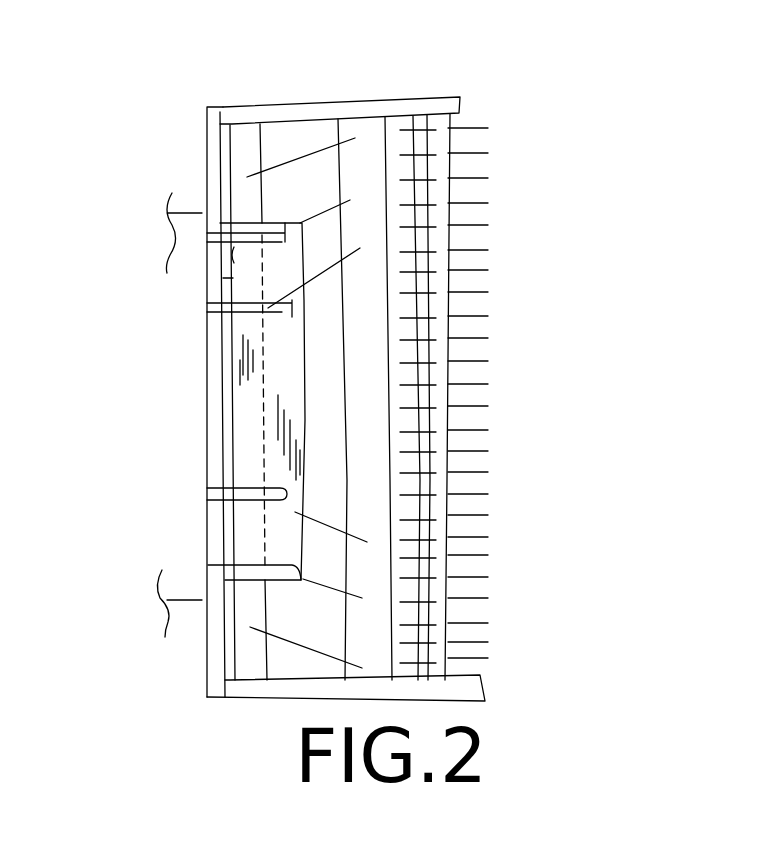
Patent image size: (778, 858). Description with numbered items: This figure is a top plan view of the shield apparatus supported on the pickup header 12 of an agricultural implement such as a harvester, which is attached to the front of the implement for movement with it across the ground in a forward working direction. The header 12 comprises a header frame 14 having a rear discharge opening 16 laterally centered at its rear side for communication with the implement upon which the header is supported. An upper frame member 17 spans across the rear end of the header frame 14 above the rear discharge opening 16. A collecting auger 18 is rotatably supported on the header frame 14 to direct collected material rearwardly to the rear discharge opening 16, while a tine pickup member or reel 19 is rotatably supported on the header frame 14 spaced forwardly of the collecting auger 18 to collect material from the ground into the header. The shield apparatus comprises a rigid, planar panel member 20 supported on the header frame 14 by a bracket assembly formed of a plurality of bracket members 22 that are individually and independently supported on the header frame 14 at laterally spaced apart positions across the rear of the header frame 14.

The header 12 is at (458, 83).
The header frame 14 is at (295, 110).
The rear discharge opening 16 is at (233, 467).
The upper frame member 17 is at (213, 152).
The collecting auger 18 is at (347, 628).
The tine pickup member or reel 19 is at (440, 550).
The rigid panel member 20 is at (244, 428).
The bracket members 22 is at (247, 243).